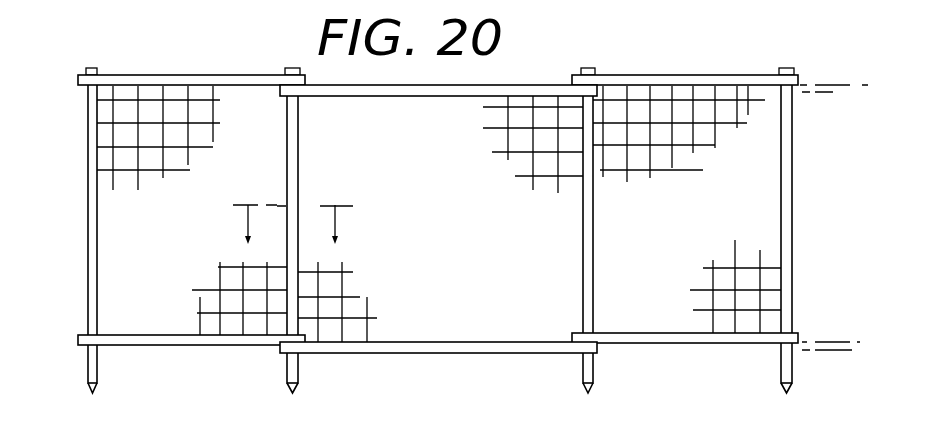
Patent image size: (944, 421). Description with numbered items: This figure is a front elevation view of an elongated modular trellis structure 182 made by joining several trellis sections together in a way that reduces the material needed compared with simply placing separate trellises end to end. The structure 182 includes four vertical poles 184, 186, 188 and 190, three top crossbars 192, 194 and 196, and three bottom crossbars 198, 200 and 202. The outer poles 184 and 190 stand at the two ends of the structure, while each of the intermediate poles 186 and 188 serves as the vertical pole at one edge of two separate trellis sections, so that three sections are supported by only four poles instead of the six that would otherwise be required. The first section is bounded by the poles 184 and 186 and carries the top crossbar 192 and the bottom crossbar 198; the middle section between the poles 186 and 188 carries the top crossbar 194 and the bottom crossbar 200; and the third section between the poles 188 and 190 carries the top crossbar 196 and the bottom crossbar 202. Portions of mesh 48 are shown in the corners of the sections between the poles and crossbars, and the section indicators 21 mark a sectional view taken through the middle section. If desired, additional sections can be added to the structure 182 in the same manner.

The structure 182 is at (870, 48).
The pole 184 is at (88, 267).
The pole 186 is at (298, 177).
The pole 188 is at (583, 273).
The pole 190 is at (793, 183).
The top crossbar 192 is at (254, 75).
The top crossbar 194 is at (551, 84).
The top crossbar 196 is at (717, 75).
The bottom crossbar 198 is at (207, 346).
The bottom crossbar 200 is at (447, 353).
The bottom crossbar 202 is at (676, 344).
The wire mesh 48 is at (100, 145).
The section line 21 is at (293, 224).